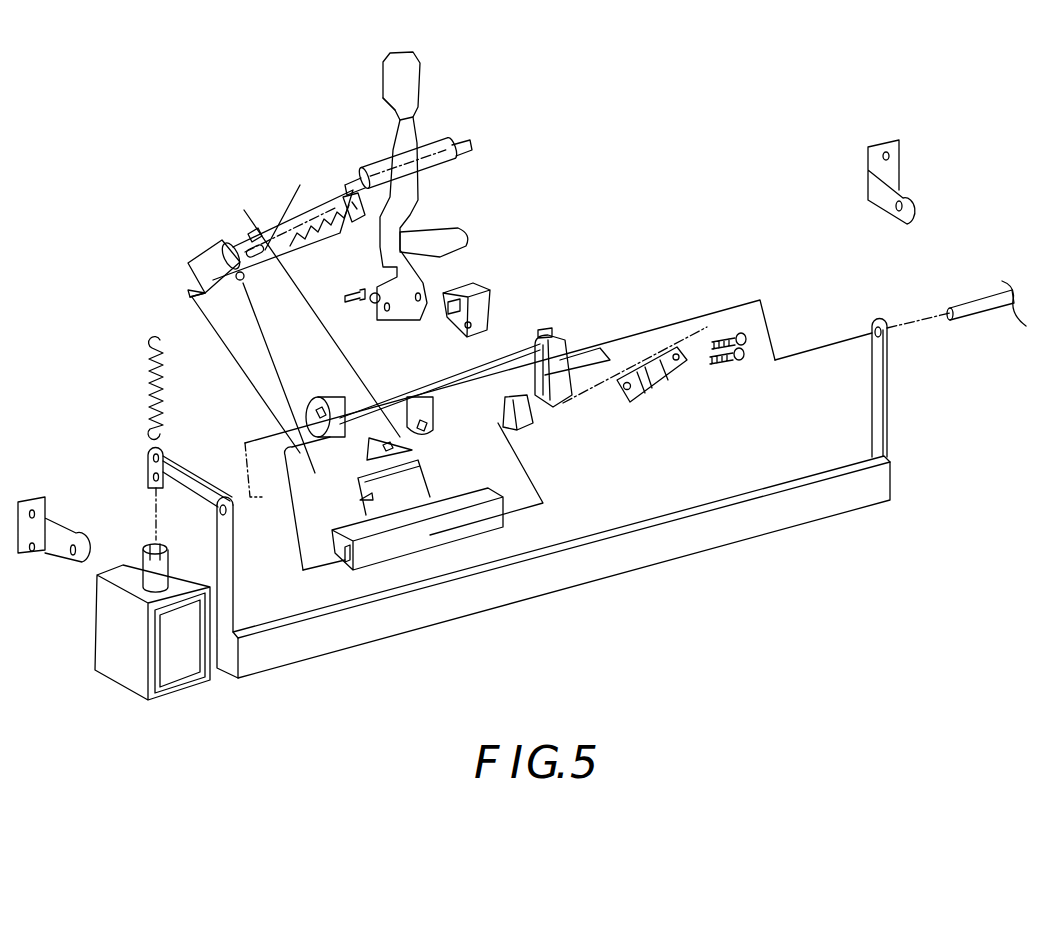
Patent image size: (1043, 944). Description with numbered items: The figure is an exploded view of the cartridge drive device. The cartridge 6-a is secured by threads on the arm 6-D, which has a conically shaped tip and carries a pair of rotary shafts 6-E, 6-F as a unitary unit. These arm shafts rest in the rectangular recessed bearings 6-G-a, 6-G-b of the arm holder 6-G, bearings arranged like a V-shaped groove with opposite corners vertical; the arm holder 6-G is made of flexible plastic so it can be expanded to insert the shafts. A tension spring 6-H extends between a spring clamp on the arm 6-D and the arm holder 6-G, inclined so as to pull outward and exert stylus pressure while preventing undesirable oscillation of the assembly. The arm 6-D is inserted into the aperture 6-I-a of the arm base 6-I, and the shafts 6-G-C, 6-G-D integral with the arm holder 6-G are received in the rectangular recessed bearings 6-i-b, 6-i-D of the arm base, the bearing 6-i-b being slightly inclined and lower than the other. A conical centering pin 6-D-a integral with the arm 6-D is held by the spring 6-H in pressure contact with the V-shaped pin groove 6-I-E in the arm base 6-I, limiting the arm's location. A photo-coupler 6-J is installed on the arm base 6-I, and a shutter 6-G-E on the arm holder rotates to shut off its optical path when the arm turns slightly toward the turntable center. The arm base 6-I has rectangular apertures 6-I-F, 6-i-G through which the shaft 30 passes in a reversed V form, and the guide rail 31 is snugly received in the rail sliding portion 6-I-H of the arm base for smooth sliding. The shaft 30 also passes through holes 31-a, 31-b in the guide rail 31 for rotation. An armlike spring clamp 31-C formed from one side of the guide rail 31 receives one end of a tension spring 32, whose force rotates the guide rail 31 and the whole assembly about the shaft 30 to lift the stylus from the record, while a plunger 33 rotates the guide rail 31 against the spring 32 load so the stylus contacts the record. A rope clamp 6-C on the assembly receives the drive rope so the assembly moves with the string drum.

The guide rail 31 is at (742, 542).
The hole 31-a is at (224, 517).
The hole 31-b is at (877, 317).
The armlike spring clamp 31-C is at (152, 450).
The shaft 30 is at (988, 313).
The tension spring 32 is at (153, 380).
The plunger 33 is at (123, 620).
The arm base 6-I is at (303, 570).
The rail sliding portion 6-I-H is at (353, 562).
The aperture 6-I-a is at (396, 496).
The V-shaped pin groove 6-I-E is at (412, 505).
The rectangular aperture 6-I-F is at (557, 347).
The rectangular aperture 6-i-G is at (290, 412).
The rectangular recessed bearing 6-i-D is at (452, 420).
The rectangular recessed bearing 6-i-b is at (543, 503).
The rope clamp 6-C is at (557, 333).
The photo-coupler 6-J is at (660, 377).
The cartridge 6-a is at (493, 313).
The centering pin 6-D-a is at (400, 227).
The arm 6-D is at (457, 170).
The arm shaft 6-E is at (350, 178).
The arm shaft 6-F is at (470, 147).
The arm holder 6-G is at (205, 248).
The shaft 6-G-C is at (190, 293).
The shaft 6-G-D is at (240, 235).
The rectangular recessed bearing 6-G-b is at (244, 210).
The rectangular recessed bearing 6-G-a is at (298, 278).
The tension spring 6-H is at (308, 232).
The shutter 6-G-E is at (467, 237).